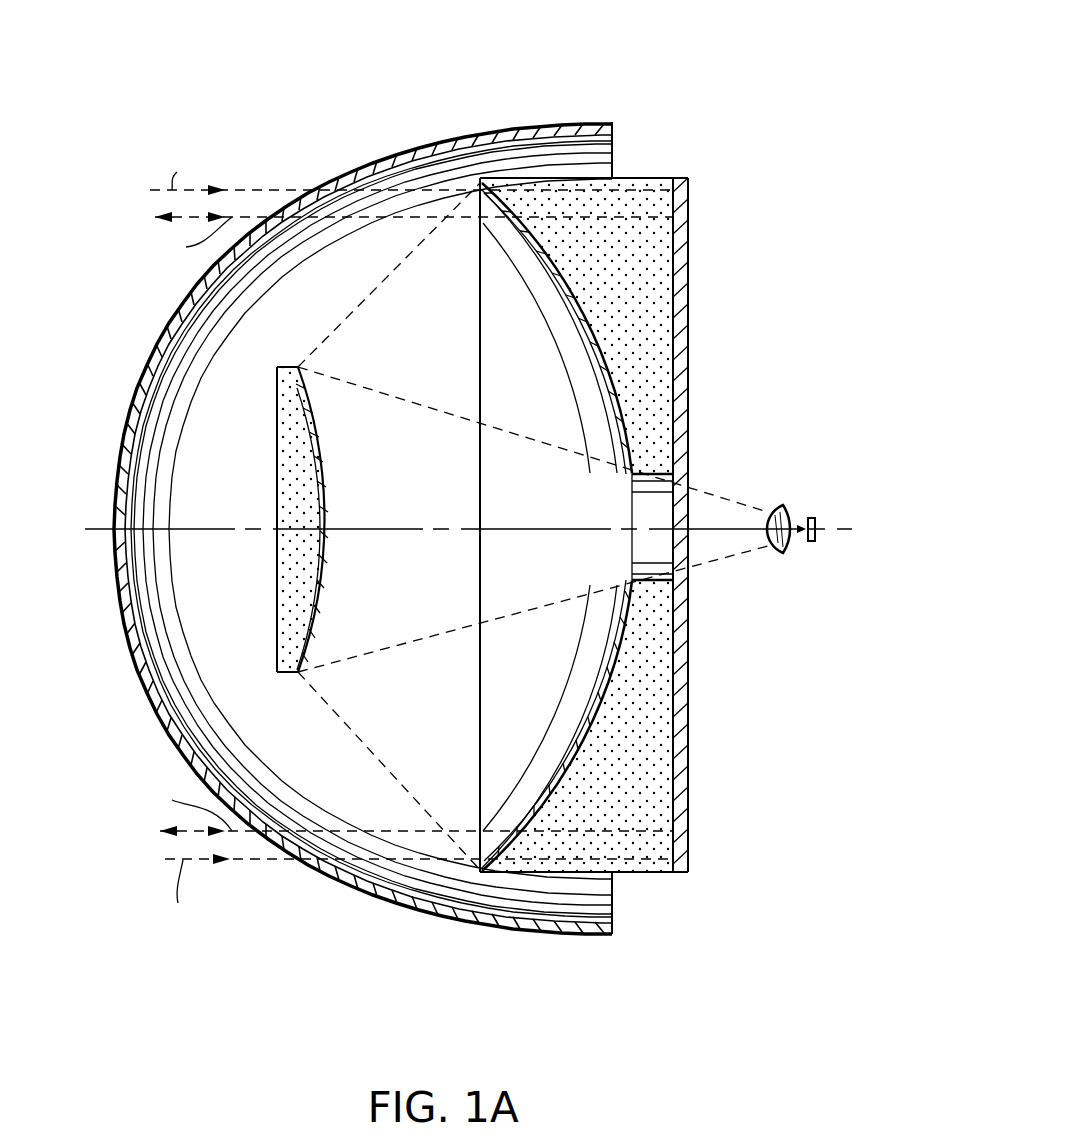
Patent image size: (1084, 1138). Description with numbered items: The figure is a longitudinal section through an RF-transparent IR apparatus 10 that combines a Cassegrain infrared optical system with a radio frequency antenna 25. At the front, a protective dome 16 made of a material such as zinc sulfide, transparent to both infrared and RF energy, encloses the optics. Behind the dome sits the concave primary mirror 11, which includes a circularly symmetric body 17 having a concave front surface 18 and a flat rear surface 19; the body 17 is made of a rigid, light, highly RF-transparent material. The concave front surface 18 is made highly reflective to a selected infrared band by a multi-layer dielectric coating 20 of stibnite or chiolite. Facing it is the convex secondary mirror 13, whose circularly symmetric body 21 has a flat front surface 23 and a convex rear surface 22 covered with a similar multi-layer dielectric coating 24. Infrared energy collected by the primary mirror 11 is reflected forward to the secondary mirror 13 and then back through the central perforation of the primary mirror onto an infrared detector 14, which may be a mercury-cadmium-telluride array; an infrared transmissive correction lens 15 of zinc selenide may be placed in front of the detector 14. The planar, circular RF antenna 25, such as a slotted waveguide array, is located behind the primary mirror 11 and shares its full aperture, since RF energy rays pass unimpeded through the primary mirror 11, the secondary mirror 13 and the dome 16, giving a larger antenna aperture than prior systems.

The RF-transparent IR apparatus 10 is at (721, 70).
The primary mirror 11 is at (660, 253).
The secondary mirror 13 is at (302, 561).
The infrared detector 14 is at (814, 520).
The correction lens 15 is at (779, 555).
The protective dome 16 is at (127, 432).
The body 17 is at (655, 873).
The concave front surface 18 is at (630, 641).
The flat rear surface 19 is at (680, 287).
The coating 20 is at (600, 705).
The body 21 is at (287, 398).
The convex rear surface 22 is at (280, 615).
The flat front surface 23 is at (277, 520).
The coating 24 is at (330, 605).
The radio frequency antenna 25 is at (690, 803).